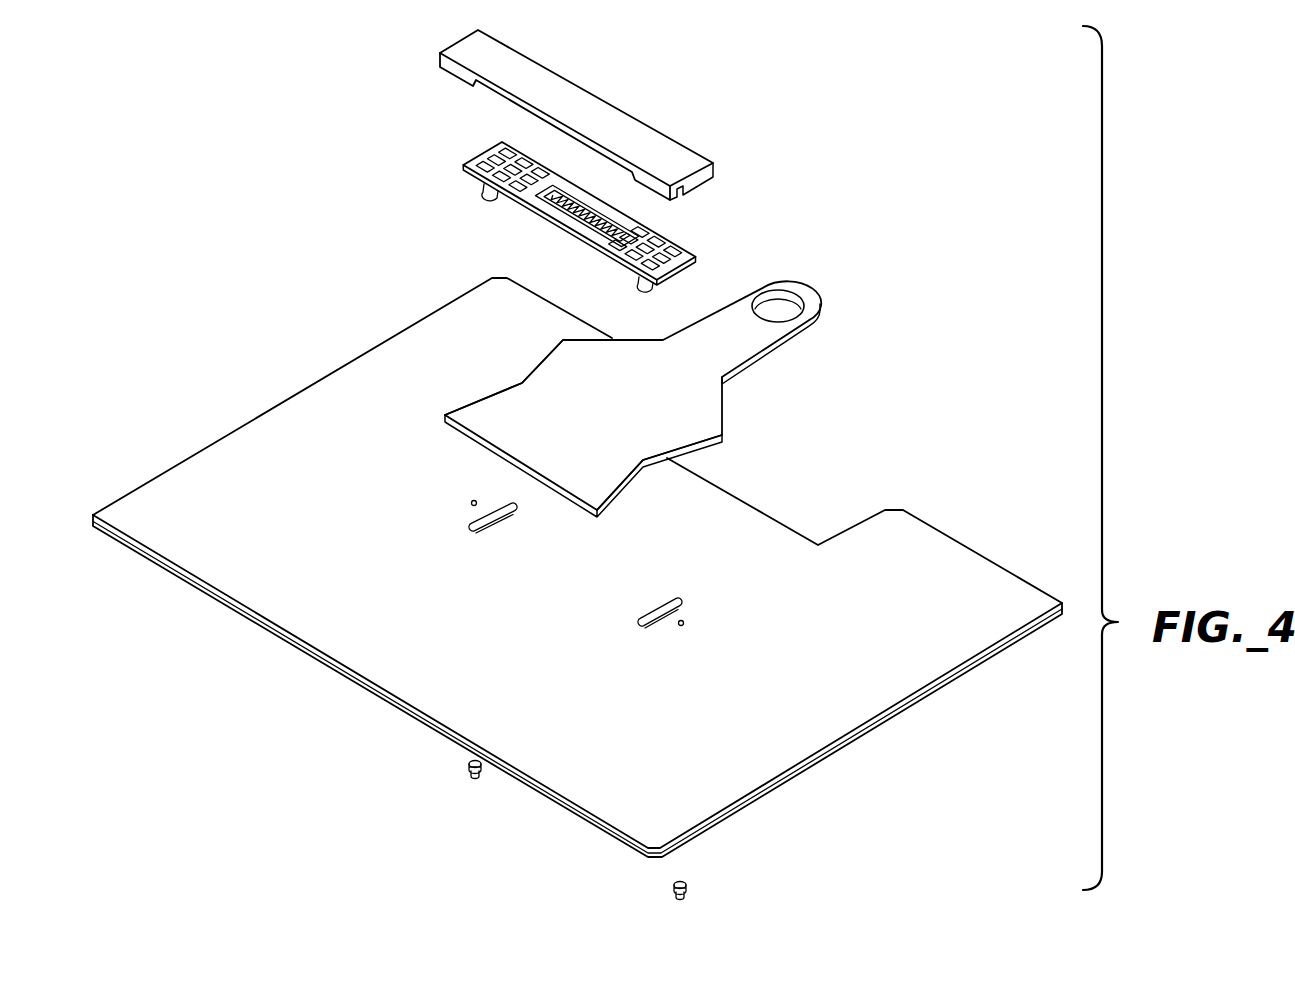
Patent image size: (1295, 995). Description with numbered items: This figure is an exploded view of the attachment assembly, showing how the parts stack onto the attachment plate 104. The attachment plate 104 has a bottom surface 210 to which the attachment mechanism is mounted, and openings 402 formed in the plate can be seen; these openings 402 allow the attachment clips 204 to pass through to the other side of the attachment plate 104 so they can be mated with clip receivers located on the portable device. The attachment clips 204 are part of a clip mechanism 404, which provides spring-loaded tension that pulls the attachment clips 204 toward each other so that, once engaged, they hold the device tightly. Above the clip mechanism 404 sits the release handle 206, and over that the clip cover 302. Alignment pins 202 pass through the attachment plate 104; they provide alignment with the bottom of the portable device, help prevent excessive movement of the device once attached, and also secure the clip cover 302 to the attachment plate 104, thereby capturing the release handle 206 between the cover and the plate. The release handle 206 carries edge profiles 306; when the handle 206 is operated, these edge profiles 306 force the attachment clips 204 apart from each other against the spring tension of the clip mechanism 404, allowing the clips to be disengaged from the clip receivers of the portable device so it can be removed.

The attachment plate 104 is at (962, 547).
The alignment pins 202 is at (477, 776).
The attachment clips 204 is at (492, 200).
The release handle 206 is at (732, 378).
The bottom surface 210 is at (902, 637).
The clip cover 302 is at (650, 125).
The edge profiles 306 is at (490, 395).
The openings 402 is at (478, 524).
The clip mechanism 404 is at (657, 231).